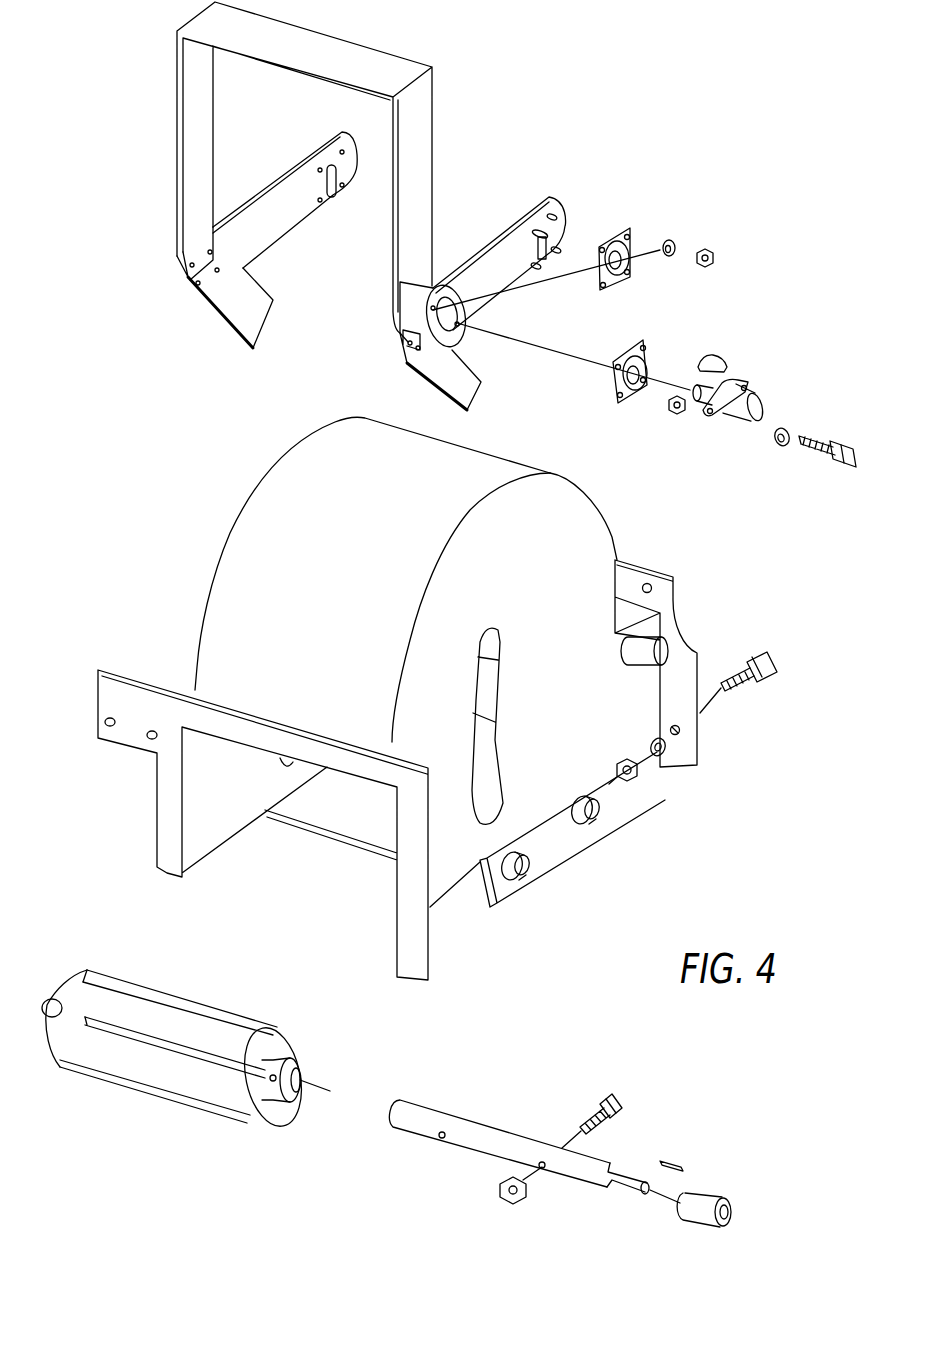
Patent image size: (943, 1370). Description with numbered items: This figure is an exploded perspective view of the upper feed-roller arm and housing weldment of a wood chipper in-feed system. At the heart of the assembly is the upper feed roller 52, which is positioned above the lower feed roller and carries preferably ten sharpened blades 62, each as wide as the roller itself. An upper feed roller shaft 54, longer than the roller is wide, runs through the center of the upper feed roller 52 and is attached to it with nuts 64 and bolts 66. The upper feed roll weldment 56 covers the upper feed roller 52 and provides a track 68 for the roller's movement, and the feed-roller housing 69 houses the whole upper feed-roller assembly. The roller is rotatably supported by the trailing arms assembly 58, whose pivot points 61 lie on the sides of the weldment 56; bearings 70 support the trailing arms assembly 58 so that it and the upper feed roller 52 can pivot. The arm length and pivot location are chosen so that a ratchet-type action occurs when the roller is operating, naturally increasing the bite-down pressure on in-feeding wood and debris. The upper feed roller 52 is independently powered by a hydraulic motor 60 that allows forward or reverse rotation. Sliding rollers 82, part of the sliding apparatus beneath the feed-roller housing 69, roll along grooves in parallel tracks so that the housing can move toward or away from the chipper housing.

The upper feed roller 52 is at (184, 1047).
The upper feed roller shaft 54 is at (508, 1130).
The upper feed roll weldment 56 is at (237, 647).
The trailing arms assembly 58 is at (441, 150).
The hydraulic motor 60 is at (754, 386).
The pivot points 61 is at (653, 630).
The sharpened blades 62 is at (83, 972).
The nuts 64 is at (500, 1192).
The bolts 66 is at (618, 1100).
The track 68 is at (487, 688).
The feed-roller housing 69 is at (427, 698).
The bearings 70 is at (608, 245).
The sliding rollers 82 is at (523, 867).